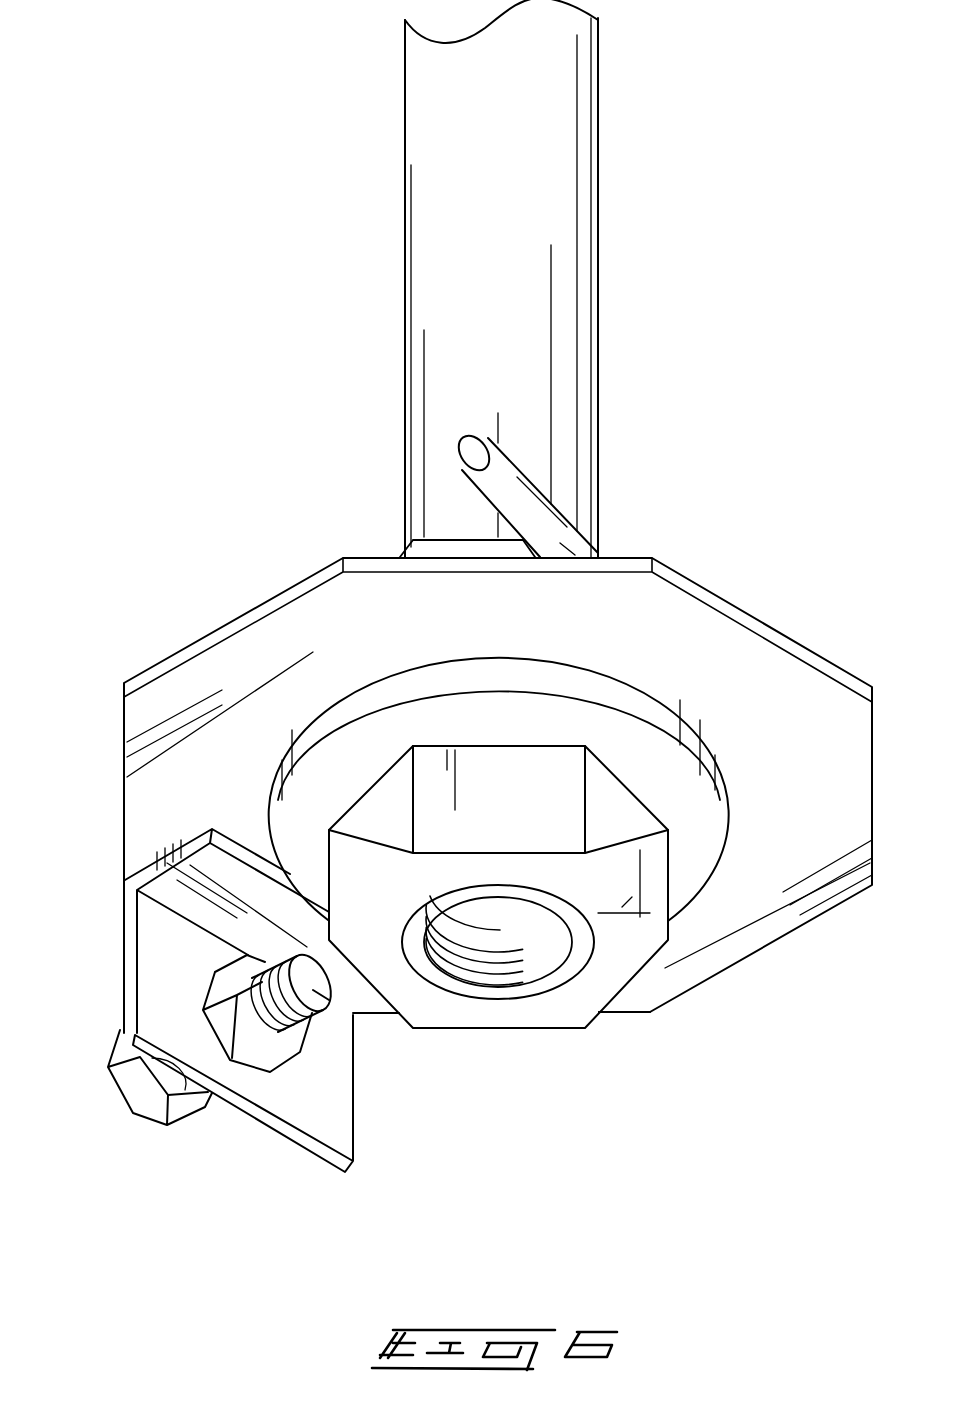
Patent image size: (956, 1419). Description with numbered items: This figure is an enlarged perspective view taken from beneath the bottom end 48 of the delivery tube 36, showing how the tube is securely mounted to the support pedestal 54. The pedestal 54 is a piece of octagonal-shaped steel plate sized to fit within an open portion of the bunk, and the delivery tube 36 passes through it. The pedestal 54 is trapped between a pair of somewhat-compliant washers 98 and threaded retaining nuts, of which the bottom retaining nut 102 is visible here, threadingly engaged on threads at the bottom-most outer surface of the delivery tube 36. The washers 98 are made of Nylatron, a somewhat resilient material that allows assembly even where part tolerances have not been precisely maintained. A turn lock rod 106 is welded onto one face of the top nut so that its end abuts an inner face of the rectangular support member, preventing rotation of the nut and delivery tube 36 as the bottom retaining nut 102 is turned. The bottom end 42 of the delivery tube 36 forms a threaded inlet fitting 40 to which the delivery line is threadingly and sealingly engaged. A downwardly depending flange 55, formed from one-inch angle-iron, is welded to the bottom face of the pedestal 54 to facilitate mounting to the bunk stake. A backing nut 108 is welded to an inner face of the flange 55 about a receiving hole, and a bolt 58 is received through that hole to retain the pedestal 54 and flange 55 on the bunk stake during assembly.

The delivery tube 36 is at (512, 200).
The bottom end 48 is at (256, 503).
The turn lock rod 106 is at (473, 450).
The pedestal 54 is at (732, 682).
The washers 98 is at (372, 757).
The bottom retaining nut 102 is at (612, 963).
The threaded inlet fitting 40 is at (537, 967).
The bottom end 42 is at (448, 1055).
The depending flange 55 is at (167, 968).
The backing nut 108 is at (262, 1058).
The bolt 58 is at (140, 1087).